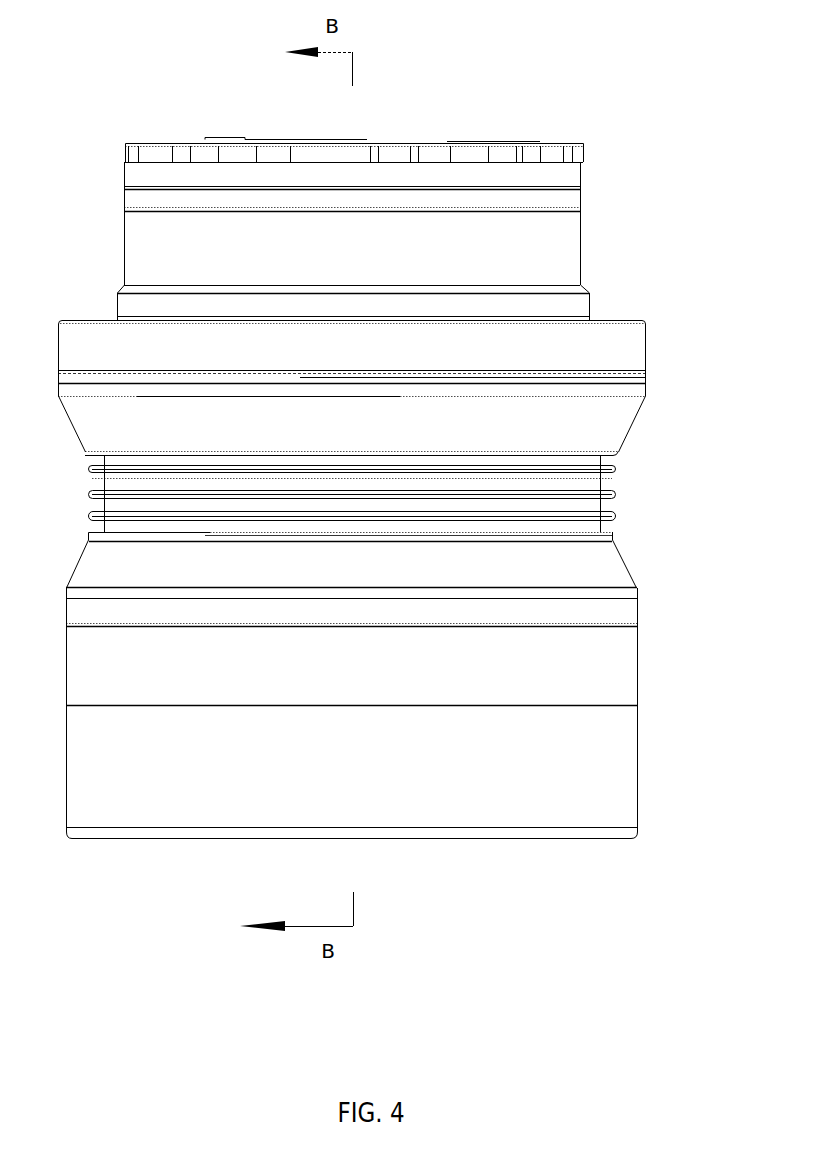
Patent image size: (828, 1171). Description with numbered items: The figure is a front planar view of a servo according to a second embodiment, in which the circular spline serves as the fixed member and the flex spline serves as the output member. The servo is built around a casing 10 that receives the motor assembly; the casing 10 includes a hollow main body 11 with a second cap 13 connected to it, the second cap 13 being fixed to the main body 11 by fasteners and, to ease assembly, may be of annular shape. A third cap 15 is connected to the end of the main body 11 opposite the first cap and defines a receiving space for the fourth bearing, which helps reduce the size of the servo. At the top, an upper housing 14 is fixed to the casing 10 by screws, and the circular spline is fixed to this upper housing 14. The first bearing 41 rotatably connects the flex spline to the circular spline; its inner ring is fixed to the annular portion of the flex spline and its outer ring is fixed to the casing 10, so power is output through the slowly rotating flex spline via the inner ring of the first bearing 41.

The first bearing 41 is at (499, 148).
The upper housing 14 is at (552, 244).
The main body 11 is at (564, 450).
The casing 10 is at (620, 476).
The second cap 13 is at (512, 656).
The third cap 15 is at (528, 813).